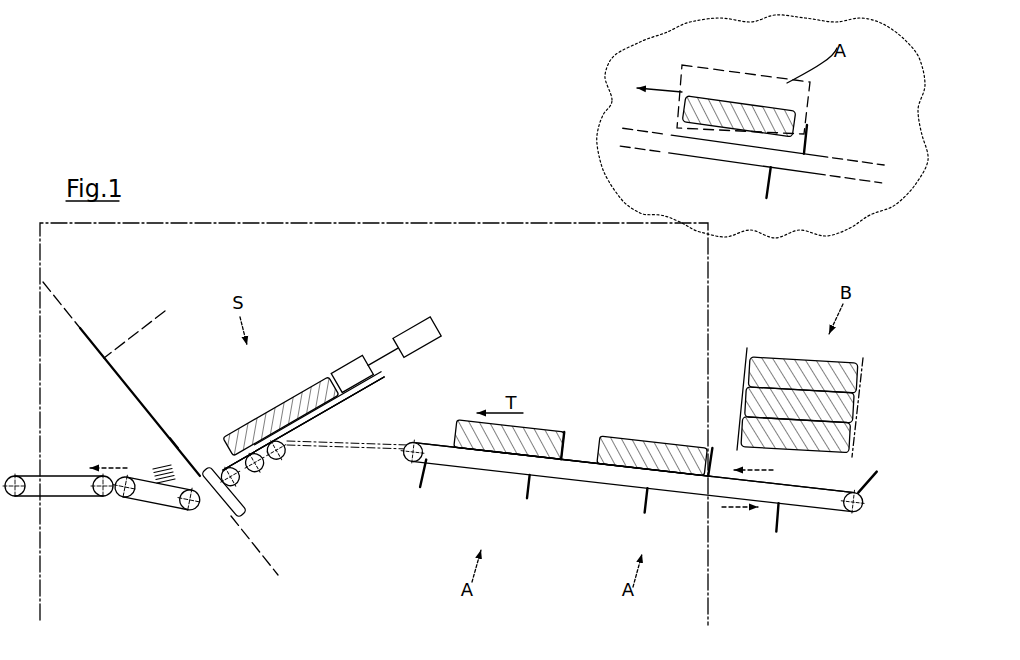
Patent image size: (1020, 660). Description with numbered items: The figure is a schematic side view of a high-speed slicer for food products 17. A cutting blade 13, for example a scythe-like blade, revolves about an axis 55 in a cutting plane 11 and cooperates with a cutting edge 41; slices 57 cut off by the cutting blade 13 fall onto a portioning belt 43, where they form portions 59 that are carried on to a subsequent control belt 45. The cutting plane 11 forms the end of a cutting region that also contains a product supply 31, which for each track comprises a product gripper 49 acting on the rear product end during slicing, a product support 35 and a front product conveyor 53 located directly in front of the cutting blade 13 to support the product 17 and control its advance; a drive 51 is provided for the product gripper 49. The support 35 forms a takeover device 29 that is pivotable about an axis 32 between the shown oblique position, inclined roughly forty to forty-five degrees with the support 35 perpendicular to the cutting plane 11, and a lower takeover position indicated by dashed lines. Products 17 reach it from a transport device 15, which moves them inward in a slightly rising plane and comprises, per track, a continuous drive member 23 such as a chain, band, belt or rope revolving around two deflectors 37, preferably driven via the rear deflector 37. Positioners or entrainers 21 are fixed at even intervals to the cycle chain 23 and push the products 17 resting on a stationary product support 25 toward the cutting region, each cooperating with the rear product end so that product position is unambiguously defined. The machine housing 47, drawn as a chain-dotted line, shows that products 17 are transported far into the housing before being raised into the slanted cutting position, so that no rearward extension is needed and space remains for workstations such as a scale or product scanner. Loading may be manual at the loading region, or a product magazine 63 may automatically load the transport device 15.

The cutting plane 11 is at (265, 559).
The cutting blade 13 is at (119, 380).
The transport device 15 is at (660, 360).
The food product 17 is at (238, 420).
The positioner 21 is at (418, 482).
The drive member 23 is at (451, 467).
The product support 25 is at (584, 446).
The takeover device 29 is at (398, 382).
The product supply 31 is at (379, 324).
The axis 32 is at (280, 462).
The product support 35 is at (357, 395).
The deflector 37 is at (404, 455).
The cutting edge 41 is at (246, 513).
The portioning belt 43 is at (152, 497).
The control belt 45 is at (61, 488).
The machine housing 47 is at (711, 270).
The product gripper 49 is at (347, 370).
The drive 51 is at (433, 319).
The front product conveyor 53 is at (247, 476).
The axis 55 is at (162, 311).
The slice 57 is at (170, 449).
The portion 59 is at (154, 468).
The product magazine 63 is at (745, 342).